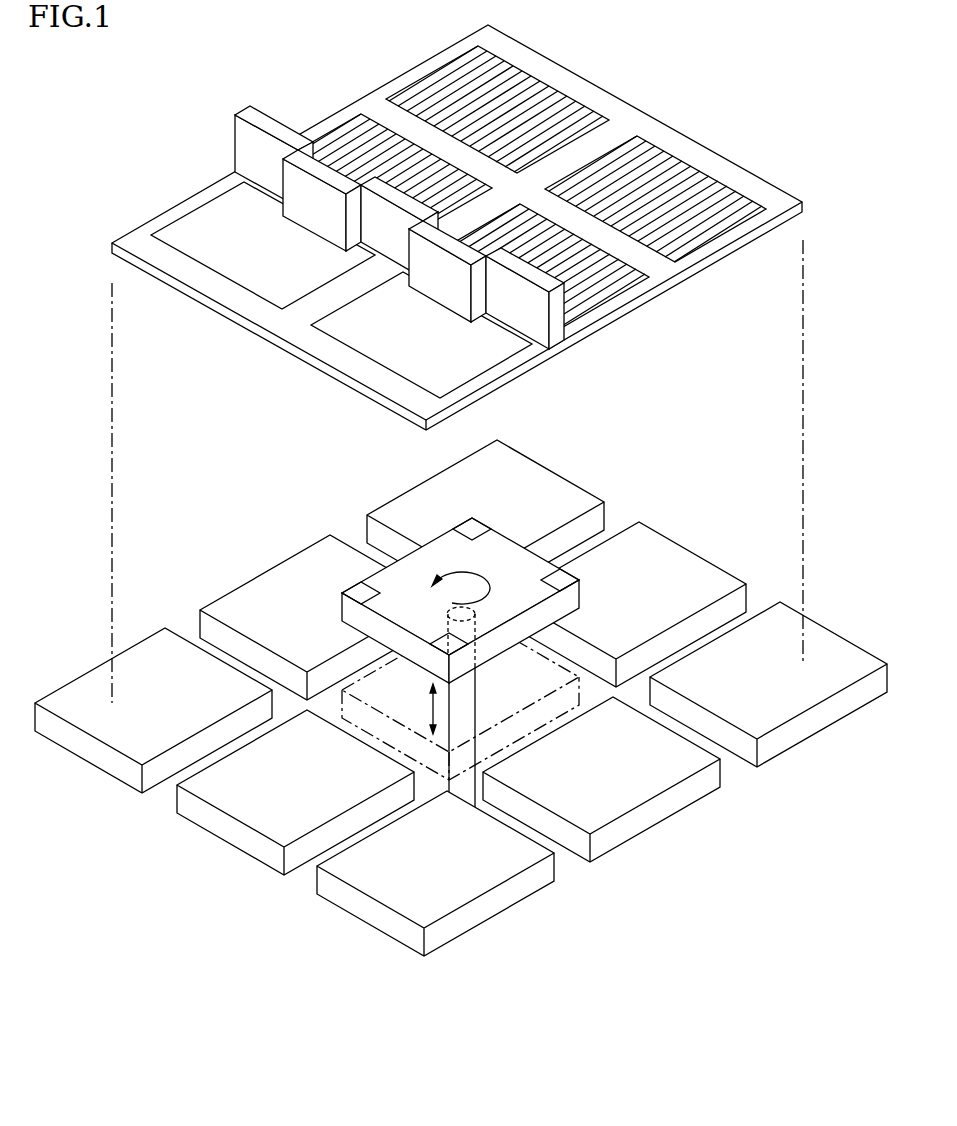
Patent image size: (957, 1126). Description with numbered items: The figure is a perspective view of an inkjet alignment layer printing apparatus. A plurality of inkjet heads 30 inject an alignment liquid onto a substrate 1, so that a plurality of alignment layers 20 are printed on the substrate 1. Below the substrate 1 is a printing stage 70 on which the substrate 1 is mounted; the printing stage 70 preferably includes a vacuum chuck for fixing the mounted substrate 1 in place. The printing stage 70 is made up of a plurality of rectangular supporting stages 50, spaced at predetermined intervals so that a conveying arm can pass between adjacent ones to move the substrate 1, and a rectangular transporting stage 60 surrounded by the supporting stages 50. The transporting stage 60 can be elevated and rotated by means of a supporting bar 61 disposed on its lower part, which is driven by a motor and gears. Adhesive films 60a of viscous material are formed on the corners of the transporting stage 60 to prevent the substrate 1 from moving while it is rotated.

The substrate 1 is at (185, 270).
The alignment layer 20 is at (681, 182).
The inkjet head 30 is at (270, 123).
The supporting stage 50 is at (235, 798).
The transporting stage 60 is at (385, 652).
The adhesive film 60a is at (478, 530).
The supporting bar 61 is at (470, 703).
The printing stage 70 is at (461, 691).